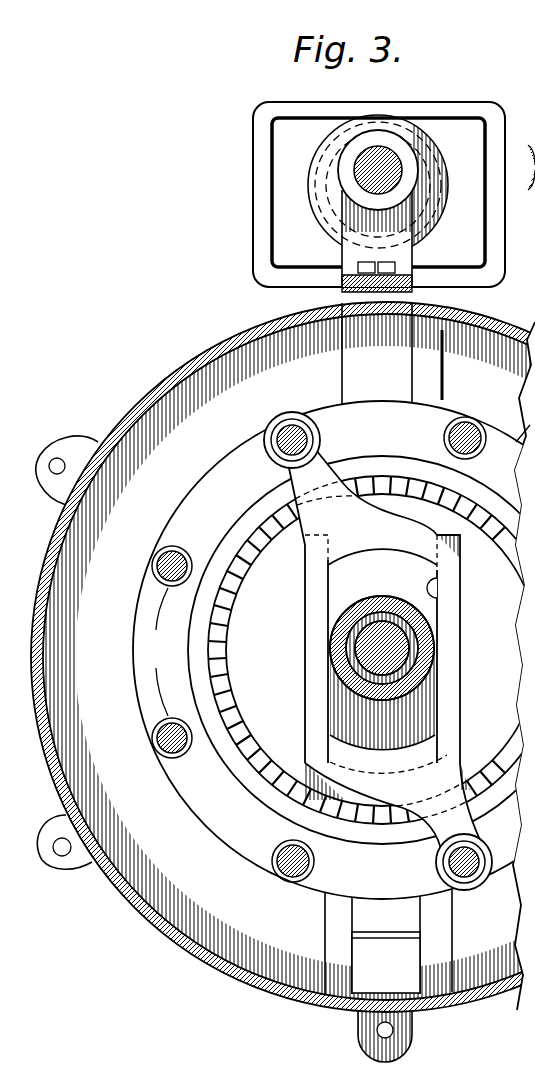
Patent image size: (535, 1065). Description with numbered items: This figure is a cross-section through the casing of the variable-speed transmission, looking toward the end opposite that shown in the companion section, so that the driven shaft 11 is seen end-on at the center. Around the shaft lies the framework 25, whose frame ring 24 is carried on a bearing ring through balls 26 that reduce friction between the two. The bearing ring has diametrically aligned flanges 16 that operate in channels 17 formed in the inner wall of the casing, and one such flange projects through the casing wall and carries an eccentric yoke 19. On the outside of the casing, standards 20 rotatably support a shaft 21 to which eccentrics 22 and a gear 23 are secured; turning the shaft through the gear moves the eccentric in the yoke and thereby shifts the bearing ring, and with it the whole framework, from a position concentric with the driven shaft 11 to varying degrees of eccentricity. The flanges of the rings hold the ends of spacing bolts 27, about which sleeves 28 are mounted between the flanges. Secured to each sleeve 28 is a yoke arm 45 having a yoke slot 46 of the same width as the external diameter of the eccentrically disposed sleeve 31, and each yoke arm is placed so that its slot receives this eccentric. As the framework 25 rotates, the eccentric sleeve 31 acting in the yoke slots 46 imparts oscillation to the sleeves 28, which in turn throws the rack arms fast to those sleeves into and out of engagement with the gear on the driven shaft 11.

The driven shaft 11 is at (372, 658).
The flange 16 is at (365, 375).
The channel 17 is at (413, 383).
The eccentric yoke 19 is at (262, 226).
The standard 20 is at (397, 148).
The shaft 21 is at (378, 172).
The eccentric 22 is at (318, 200).
The gear 23 is at (428, 143).
The frame ring 24 is at (334, 650).
The framework 25 is at (128, 695).
The ball 26 is at (240, 553).
The spacing bolt 27 is at (312, 649).
The sleeve 28 is at (361, 650).
The sleeve 31 is at (330, 650).
The yoke arm 45 is at (452, 672).
The yoke slot 46 is at (437, 598).